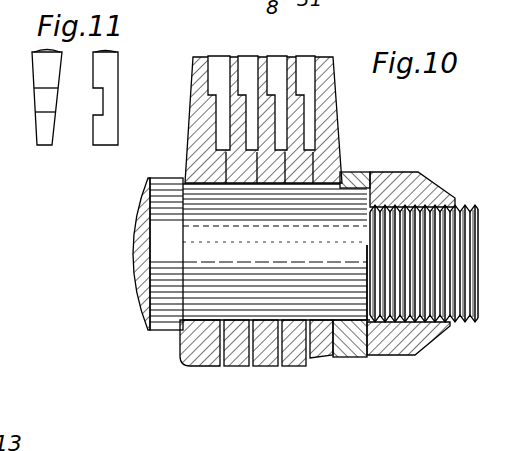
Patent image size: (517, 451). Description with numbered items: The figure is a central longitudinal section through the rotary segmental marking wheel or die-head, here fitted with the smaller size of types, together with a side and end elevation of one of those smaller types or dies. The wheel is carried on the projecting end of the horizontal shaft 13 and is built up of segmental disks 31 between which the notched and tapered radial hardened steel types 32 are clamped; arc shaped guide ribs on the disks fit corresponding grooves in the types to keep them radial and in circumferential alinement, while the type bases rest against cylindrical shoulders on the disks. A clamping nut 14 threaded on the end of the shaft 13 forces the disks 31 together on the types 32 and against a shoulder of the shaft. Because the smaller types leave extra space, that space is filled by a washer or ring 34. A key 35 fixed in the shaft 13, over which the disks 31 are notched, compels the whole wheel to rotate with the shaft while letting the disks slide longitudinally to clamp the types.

In FIG. 10, the shaft 13 is at (251, 254).
In FIG. 10, the clamping nut 14 is at (437, 187).
In FIG. 10, the segmental disks 31 is at (192, 88).
In FIG. 11, the types 32 is at (76, 98).
In FIG. 10, the types 32 is at (264, 103).
In FIG. 10, the washer or ring 34 is at (358, 172).
In FIG. 10, the key 35 is at (300, 193).